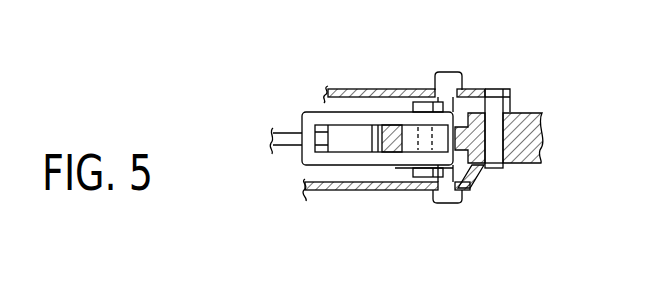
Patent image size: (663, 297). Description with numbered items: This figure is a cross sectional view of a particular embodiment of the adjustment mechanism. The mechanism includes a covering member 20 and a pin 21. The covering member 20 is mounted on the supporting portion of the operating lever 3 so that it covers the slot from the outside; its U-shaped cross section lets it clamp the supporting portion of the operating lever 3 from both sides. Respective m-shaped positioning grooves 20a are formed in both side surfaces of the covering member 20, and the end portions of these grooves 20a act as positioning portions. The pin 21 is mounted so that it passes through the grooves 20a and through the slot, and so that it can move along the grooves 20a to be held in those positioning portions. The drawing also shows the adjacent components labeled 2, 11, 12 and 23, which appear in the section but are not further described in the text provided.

The tube 2 is at (324, 188).
The operating lever 3 is at (529, 112).
The housing body 11 is at (353, 120).
The inner piece 12 is at (401, 125).
The covering member 20 is at (477, 180).
The positioning grooves 20a is at (412, 188).
The pin 21 is at (453, 200).
The washer 23 is at (493, 168).